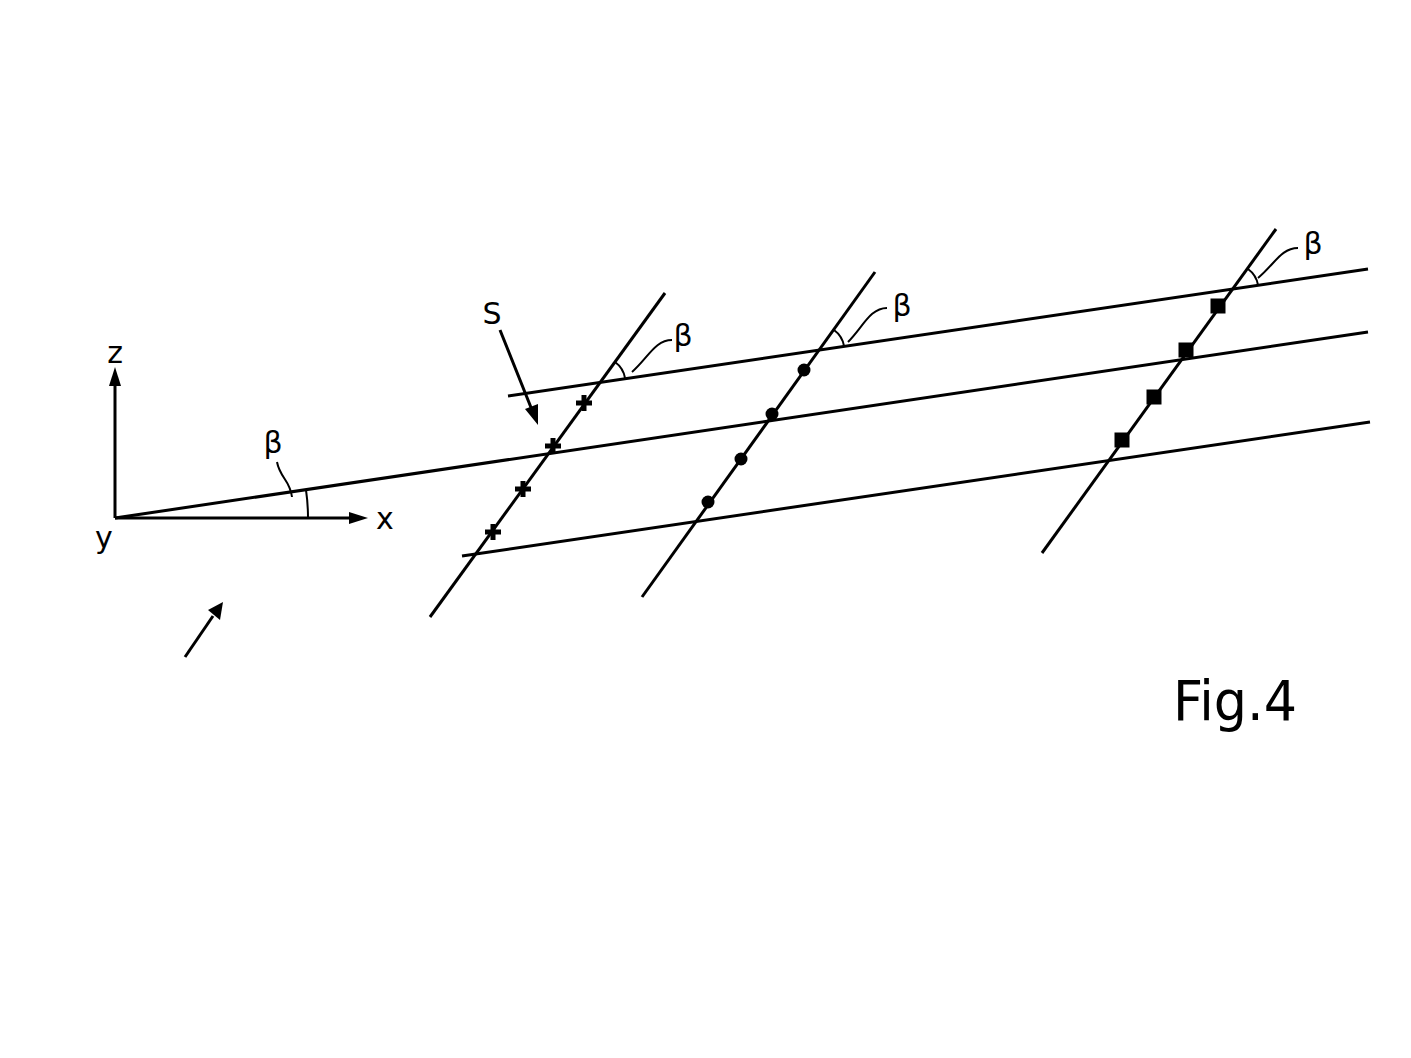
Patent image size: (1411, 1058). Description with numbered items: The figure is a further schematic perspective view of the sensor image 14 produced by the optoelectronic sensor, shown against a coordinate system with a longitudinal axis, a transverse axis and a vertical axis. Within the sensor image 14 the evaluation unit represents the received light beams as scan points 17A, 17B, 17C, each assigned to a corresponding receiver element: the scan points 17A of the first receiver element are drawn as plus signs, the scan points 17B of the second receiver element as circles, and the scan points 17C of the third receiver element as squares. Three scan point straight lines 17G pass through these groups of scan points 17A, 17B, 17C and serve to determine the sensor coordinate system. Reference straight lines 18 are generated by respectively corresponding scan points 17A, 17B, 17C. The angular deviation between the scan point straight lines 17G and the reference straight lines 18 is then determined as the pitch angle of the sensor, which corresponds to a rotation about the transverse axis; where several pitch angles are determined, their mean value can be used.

The sensor image 14 is at (191, 646).
The scan points assigned to the first receiver element 17A is at (502, 535).
The scan points assigned to the second receiver element 17B is at (712, 503).
The scan points assigned to the third receiver element 17C is at (1130, 445).
The scan point straight lines 17G is at (448, 595).
The reference straight lines 18 is at (1117, 306).